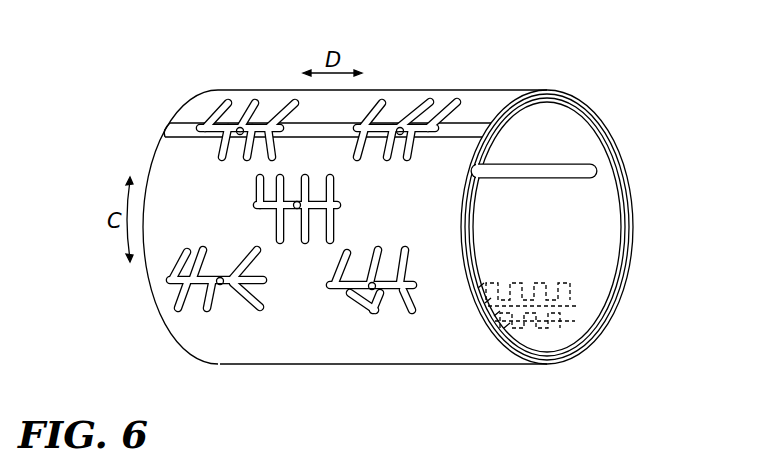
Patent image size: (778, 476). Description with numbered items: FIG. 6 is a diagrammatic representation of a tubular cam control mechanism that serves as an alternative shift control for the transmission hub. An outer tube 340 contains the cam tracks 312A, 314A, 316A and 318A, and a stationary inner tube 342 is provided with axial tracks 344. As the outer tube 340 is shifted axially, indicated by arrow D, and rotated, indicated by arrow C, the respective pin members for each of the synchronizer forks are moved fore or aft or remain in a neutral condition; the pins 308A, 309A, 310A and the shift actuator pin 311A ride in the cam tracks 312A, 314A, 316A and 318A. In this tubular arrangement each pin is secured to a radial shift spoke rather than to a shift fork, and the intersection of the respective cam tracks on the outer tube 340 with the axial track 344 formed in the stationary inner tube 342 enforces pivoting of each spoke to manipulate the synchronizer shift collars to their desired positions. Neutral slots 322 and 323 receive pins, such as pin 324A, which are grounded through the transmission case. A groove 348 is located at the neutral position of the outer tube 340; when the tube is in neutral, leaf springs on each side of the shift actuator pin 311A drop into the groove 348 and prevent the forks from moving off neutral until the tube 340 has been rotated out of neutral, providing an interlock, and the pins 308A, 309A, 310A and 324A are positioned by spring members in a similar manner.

The pin 308A is at (223, 282).
The pin 309A is at (239, 130).
The pin 310A is at (367, 288).
The shift actuator pin 311A is at (400, 127).
The cam track 312A is at (198, 323).
The cam track 314A is at (259, 83).
The cam track 316A is at (373, 280).
The cam track 318A is at (407, 83).
The neutral slot 322 is at (301, 207).
The neutral slot 323 is at (576, 292).
The pin 324A is at (290, 205).
The outer tube 340 is at (427, 190).
The inner tube 342 is at (603, 138).
The axial track 344 is at (580, 174).
The groove 348 is at (470, 133).